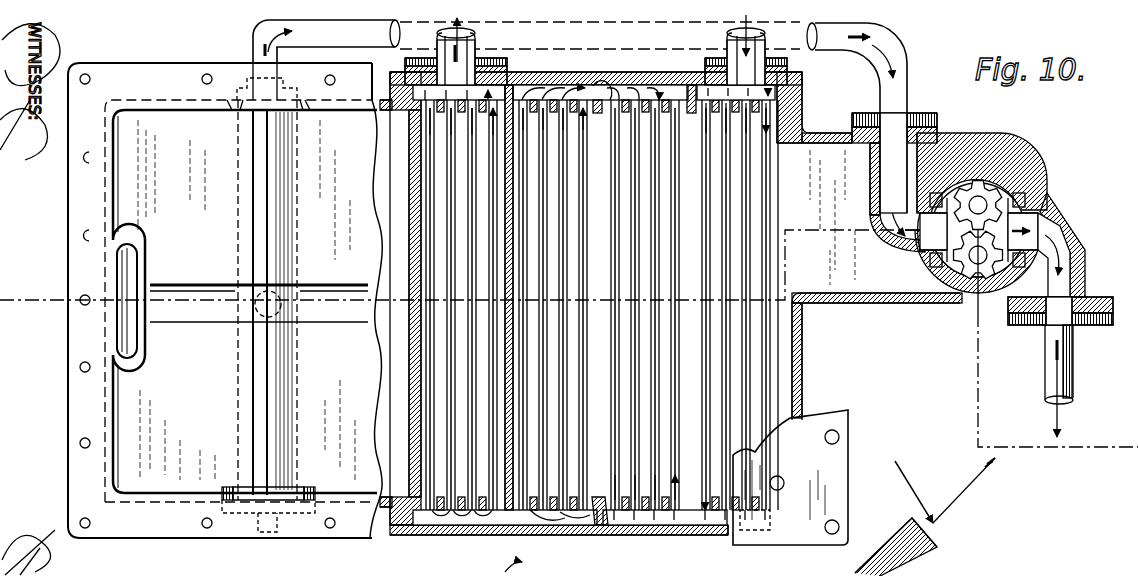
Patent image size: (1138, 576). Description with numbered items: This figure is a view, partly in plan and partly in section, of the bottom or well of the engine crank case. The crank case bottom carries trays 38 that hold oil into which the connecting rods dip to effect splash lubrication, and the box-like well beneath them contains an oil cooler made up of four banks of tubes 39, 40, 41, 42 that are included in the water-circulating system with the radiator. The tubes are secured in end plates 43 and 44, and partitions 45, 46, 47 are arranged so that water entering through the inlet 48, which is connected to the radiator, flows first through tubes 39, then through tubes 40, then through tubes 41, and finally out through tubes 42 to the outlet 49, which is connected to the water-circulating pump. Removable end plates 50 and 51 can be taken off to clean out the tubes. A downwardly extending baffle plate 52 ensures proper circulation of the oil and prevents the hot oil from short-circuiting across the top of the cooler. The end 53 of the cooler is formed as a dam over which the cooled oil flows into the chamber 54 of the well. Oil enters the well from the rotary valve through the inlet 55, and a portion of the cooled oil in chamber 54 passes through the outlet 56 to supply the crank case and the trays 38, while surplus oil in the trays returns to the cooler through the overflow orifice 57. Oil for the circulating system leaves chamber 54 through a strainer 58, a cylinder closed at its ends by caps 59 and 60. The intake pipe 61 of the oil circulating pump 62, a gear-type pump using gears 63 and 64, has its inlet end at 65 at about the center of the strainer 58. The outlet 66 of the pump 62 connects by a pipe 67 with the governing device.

The tray 38 is at (222, 300).
The bank of tubes 39 is at (737, 297).
The bank of tubes 40 is at (645, 305).
The bank of tubes 41 is at (553, 305).
The bank of tubes 42 is at (461, 305).
The end plate 43 is at (599, 522).
The end plate 44 is at (599, 100).
The partition 45 is at (678, 84).
The partition 46 is at (606, 536).
The partition 47 is at (518, 98).
The inlet 48 is at (756, 41).
The outlet 49 is at (466, 43).
The removable end plate 50 is at (476, 537).
The removable end plate 51 is at (576, 82).
The baffle plate 52 is at (510, 398).
The end of the cooler 53 is at (412, 318).
The chamber 54 is at (382, 460).
The inlet 55 is at (1005, 158).
The outlet 56 is at (128, 268).
The overflow orifice 57 is at (778, 476).
The strainer 58 is at (238, 354).
The cap 59 is at (294, 514).
The cap 60 is at (247, 78).
The intake pipe 61 is at (326, 41).
The oil circulating pump 62 is at (1037, 213).
The gear 63 is at (966, 185).
The gear 64 is at (980, 282).
The inlet end of intake pipe 65 is at (290, 312).
The outlet 66 is at (1068, 280).
The pipe 67 is at (1063, 349).